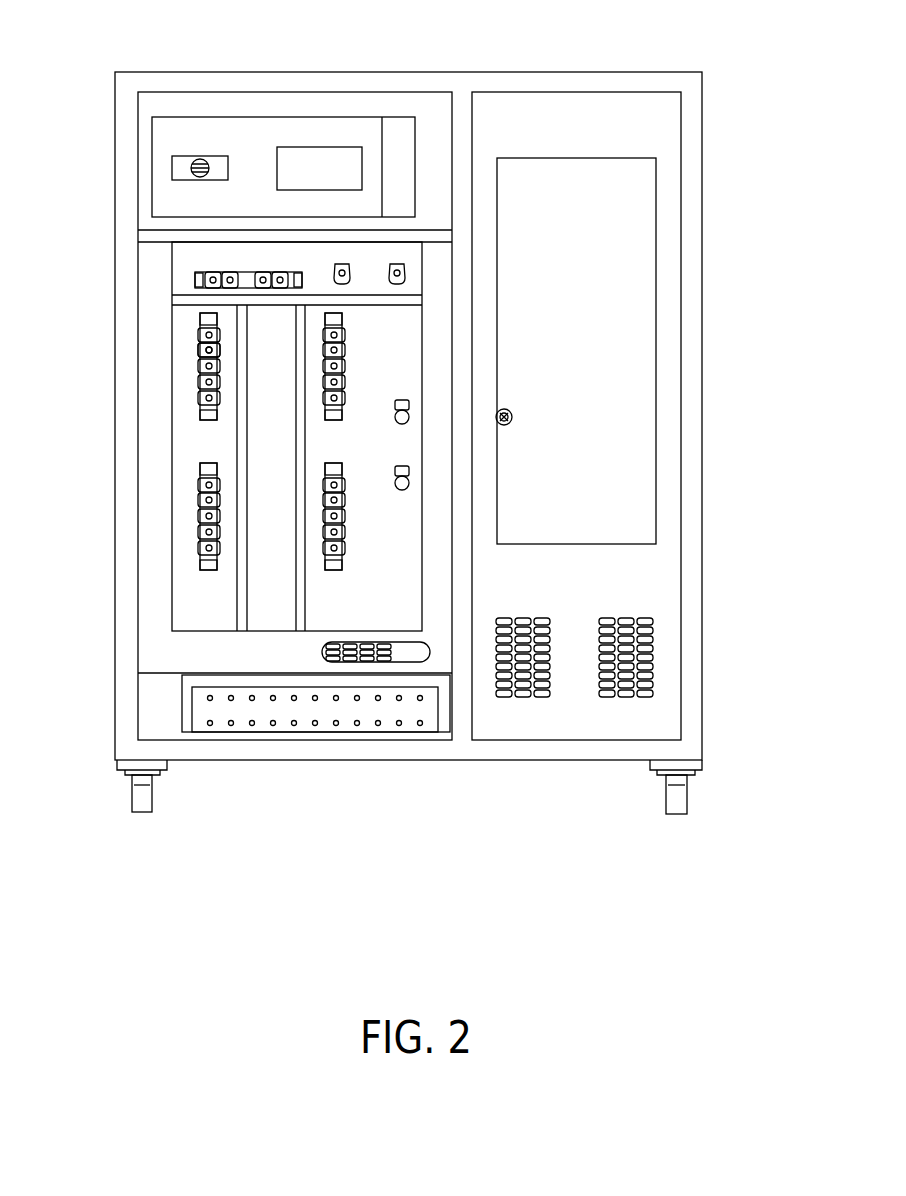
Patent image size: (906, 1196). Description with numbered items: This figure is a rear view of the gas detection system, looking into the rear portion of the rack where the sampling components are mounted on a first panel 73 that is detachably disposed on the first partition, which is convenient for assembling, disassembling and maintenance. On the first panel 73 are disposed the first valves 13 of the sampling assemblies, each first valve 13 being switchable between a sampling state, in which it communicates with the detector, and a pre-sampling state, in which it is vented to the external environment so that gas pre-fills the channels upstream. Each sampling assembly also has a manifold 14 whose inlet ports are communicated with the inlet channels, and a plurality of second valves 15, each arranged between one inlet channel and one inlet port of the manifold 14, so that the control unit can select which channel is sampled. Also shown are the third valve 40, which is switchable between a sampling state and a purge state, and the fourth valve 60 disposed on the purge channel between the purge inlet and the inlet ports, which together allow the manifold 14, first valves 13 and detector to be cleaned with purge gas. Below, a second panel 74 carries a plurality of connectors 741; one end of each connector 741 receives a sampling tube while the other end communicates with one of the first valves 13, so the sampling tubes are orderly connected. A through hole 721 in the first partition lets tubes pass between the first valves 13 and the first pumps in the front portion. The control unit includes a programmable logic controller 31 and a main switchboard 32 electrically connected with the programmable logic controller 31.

The first valve 13 is at (200, 275).
The manifold 14 is at (200, 322).
The second valve 15 is at (200, 352).
The programmable logic controller 31 is at (656, 223).
The main switchboard 32 is at (246, 130).
The third valve 40 is at (397, 262).
The fourth valve 60 is at (343, 262).
The first panel 73 is at (185, 594).
The second panel 74 is at (316, 762).
The through hole 721 is at (408, 662).
The connector 741 is at (293, 740).